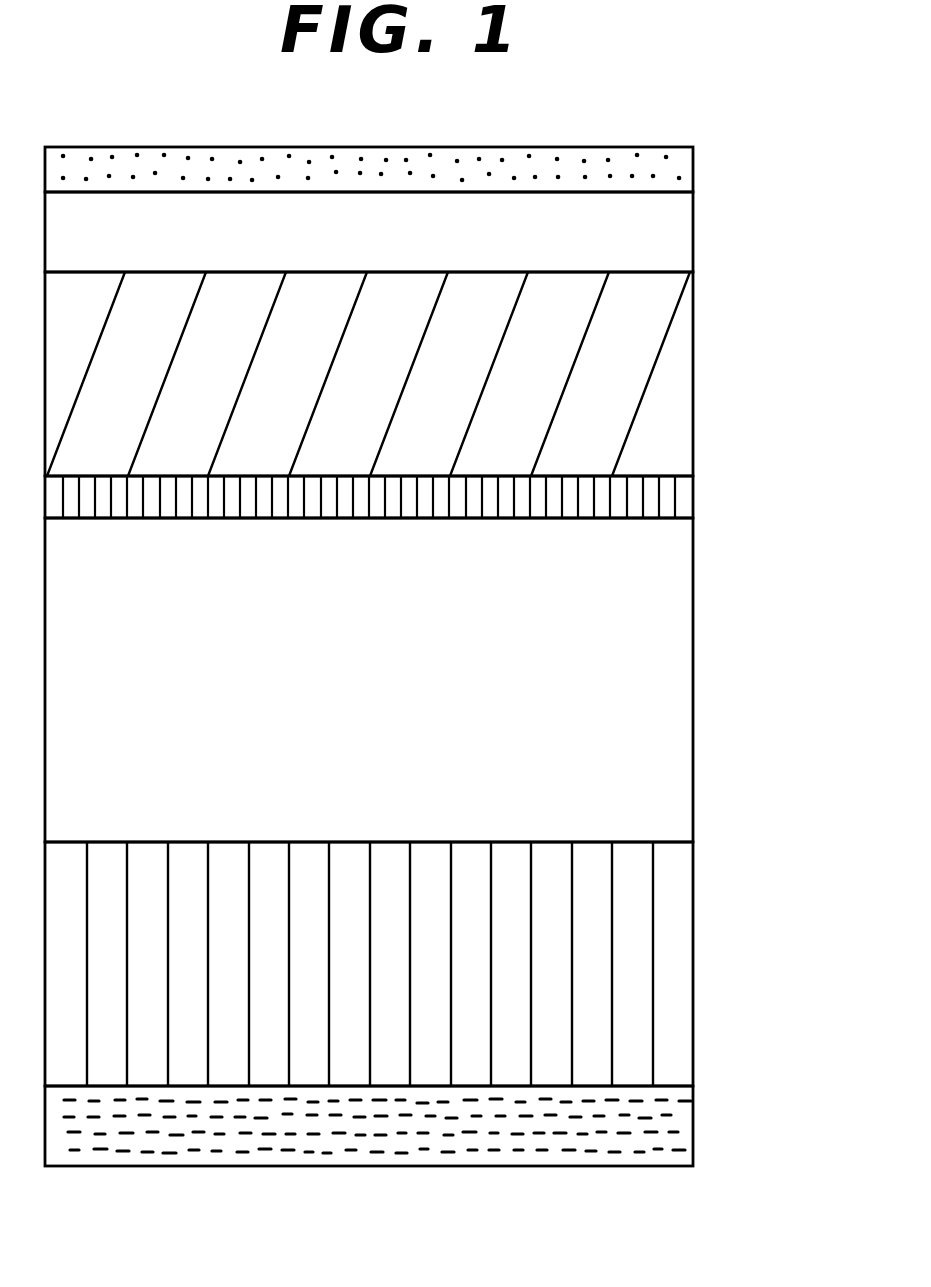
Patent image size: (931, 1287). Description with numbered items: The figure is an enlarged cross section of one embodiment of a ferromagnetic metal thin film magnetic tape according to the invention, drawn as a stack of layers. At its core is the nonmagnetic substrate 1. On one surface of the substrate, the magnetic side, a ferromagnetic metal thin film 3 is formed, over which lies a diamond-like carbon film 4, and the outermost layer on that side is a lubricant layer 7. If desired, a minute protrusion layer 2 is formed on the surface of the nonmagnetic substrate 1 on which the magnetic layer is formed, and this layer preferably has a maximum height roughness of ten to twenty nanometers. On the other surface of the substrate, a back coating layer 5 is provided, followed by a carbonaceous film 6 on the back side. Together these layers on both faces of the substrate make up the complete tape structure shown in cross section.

The nonmagnetic substrate 1 is at (610, 679).
The minute protrusion layer 2 is at (610, 497).
The ferromagnetic metal thin film 3 is at (610, 372).
The diamond-like carbon film 4 is at (610, 229).
The back coating layer 5 is at (613, 962).
The carbonaceous film 6 is at (613, 1125).
The lubricant layer 7 is at (610, 168).